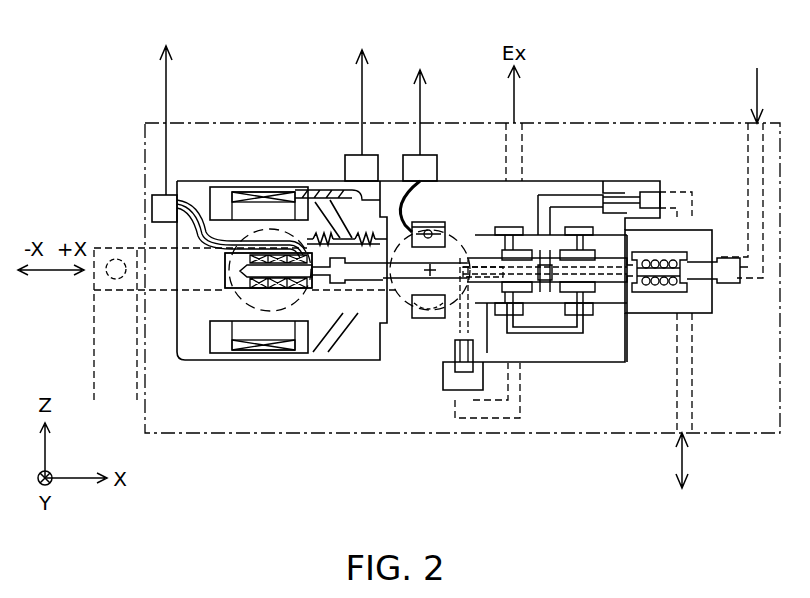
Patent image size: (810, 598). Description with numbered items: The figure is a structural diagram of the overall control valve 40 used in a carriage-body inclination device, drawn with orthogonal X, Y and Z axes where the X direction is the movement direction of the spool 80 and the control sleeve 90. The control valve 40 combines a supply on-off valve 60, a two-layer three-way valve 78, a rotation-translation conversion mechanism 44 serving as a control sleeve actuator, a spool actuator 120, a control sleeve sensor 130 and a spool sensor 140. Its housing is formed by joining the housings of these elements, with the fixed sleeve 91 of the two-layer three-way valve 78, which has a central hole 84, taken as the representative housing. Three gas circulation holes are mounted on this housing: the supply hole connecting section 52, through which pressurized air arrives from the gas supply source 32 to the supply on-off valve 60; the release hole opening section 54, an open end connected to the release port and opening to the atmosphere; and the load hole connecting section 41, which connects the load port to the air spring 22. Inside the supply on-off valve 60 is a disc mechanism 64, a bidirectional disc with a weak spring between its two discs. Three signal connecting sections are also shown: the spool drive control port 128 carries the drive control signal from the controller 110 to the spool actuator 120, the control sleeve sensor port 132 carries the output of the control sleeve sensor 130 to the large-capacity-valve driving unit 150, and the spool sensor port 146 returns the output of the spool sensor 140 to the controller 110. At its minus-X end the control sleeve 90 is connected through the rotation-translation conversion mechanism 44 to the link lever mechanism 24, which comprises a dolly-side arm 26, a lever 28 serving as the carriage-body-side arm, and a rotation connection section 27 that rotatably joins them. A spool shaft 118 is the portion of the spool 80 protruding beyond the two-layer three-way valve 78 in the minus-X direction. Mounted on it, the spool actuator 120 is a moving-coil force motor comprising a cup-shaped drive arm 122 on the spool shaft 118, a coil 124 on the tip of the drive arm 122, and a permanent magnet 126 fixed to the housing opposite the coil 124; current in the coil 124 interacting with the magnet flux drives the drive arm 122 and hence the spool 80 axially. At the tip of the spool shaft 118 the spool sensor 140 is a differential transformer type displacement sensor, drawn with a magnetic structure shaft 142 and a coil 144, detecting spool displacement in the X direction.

The control valve 40 is at (618, 122).
The controller 110 is at (263, 108).
The large-capacity-valve driving unit 150 is at (420, 101).
The gas supply source 32 is at (747, 159).
The air spring 22 is at (681, 412).
The spool sensor port 146 is at (152, 213).
The link lever mechanism 24 is at (57, 297).
The rotation connection section 27 is at (116, 259).
The lever 28 is at (163, 280).
The dolly-side arm 26 is at (120, 349).
The spool actuator 120 is at (279, 198).
The coil 124 is at (240, 192).
The permanent magnet 126 is at (278, 212).
The drive arm 122 is at (325, 195).
The spool drive control port 128 is at (345, 131).
The coil 144 is at (272, 292).
The magnetic structure shaft 142 is at (236, 284).
The spool sensor 140 is at (290, 300).
The rotation-translation conversion mechanism 44 is at (395, 310).
The control sleeve sensor 130 is at (418, 312).
The control sleeve sensor port 132 is at (430, 168).
The spool shaft 118 is at (450, 268).
The release hole opening section 54 is at (463, 390).
The two-layer three-way valve 78 is at (550, 308).
The central hole 84 is at (490, 256).
The control sleeve 90 is at (573, 317).
The spool 80 is at (613, 313).
The fixed sleeve 91 is at (544, 320).
The load hole connecting section 41 is at (652, 192).
The supply on-off valve 60 is at (686, 264).
The disc mechanism 64 is at (652, 292).
The supply hole connecting section 52 is at (730, 284).